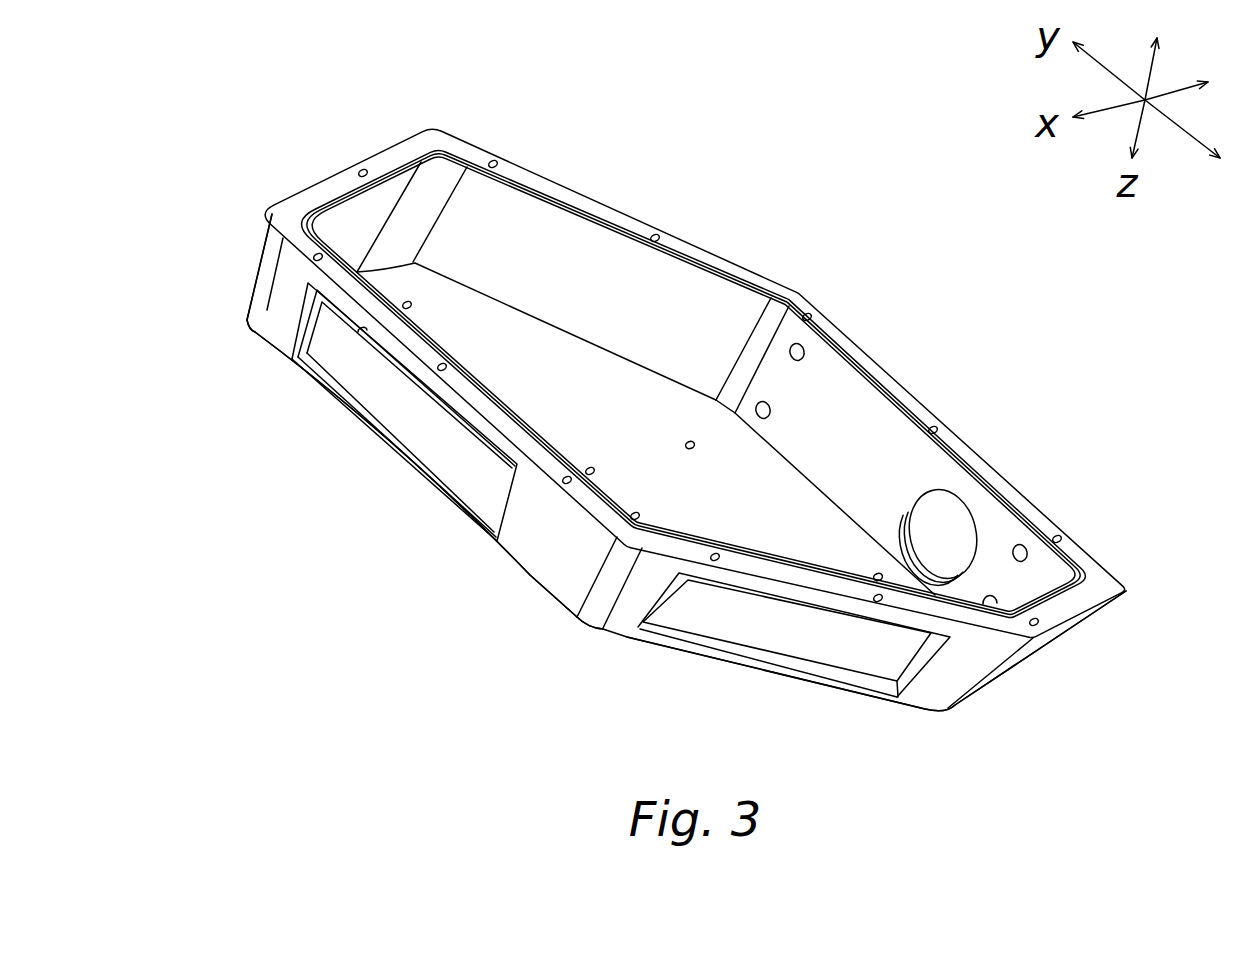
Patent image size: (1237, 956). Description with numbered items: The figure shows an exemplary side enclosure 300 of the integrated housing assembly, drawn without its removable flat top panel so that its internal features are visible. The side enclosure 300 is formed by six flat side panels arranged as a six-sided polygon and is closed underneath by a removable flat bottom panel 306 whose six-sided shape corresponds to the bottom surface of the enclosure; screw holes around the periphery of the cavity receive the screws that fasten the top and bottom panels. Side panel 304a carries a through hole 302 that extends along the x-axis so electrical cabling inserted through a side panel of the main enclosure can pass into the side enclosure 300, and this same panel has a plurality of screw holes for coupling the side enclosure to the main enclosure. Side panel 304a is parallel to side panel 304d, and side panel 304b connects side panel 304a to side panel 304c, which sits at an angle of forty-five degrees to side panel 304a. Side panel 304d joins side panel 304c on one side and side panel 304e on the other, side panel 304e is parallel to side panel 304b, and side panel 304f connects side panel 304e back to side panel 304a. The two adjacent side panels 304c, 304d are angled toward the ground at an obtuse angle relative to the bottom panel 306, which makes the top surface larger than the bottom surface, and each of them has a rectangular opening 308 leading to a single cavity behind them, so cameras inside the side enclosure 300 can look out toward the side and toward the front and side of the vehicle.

The side enclosure 300 is at (1036, 367).
The through hole 302 is at (971, 493).
The side panel 304a is at (1044, 512).
The side panel 304b is at (1067, 644).
The side panel 304c is at (628, 605).
The side panel 304d is at (528, 555).
The side panel 304e is at (287, 187).
The side panel 304f is at (579, 182).
The bottom panel 306 is at (609, 379).
The opening 308 is at (303, 321).